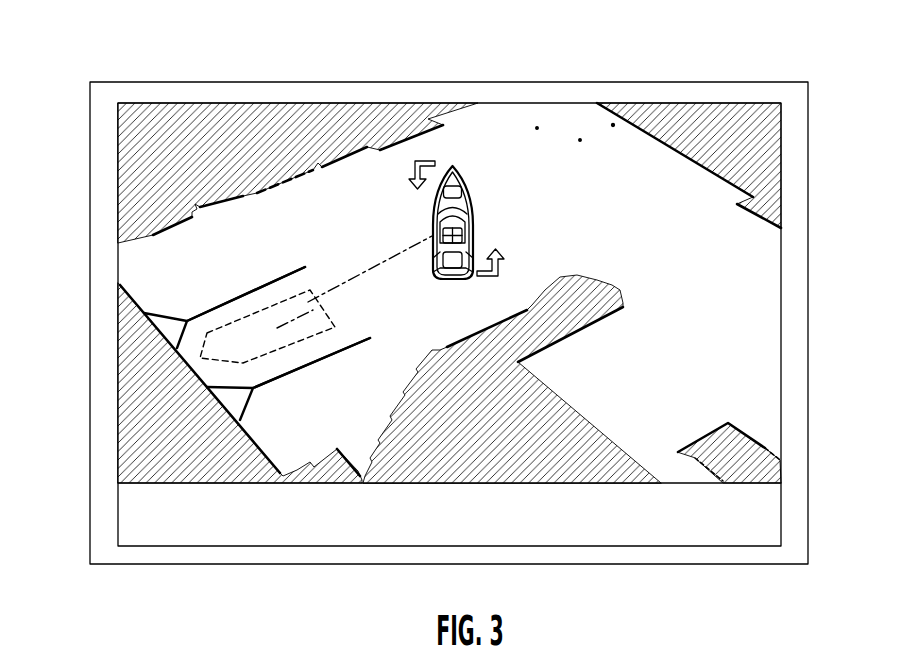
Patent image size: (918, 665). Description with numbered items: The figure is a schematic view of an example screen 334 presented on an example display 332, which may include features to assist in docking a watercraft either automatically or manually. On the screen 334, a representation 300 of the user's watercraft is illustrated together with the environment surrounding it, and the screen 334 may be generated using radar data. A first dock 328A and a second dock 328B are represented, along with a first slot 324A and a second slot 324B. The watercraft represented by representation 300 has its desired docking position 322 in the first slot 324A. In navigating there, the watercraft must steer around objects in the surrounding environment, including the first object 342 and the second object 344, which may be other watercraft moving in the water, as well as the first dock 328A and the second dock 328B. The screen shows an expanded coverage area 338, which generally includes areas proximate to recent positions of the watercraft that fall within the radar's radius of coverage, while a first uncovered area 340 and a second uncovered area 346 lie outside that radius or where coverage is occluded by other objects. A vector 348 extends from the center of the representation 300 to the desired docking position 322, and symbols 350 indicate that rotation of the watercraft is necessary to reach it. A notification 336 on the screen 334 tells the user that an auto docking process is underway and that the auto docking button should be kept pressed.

The representation of the watercraft 300 is at (477, 200).
The desired docking position 322 is at (207, 338).
The first slot 324A is at (180, 368).
The second slot 324B is at (130, 303).
The first dock 328A is at (270, 403).
The second dock 328B is at (252, 291).
The display 332 is at (90, 129).
The screen 334 is at (117, 220).
The notification 336 is at (809, 512).
The expanded coverage area 338 is at (760, 260).
The first uncovered area 340 is at (765, 148).
The first object 342 is at (608, 314).
The second object 344 is at (733, 423).
The second uncovered area 346 is at (750, 462).
The vector 348 is at (388, 257).
The symbols 350 is at (437, 157).